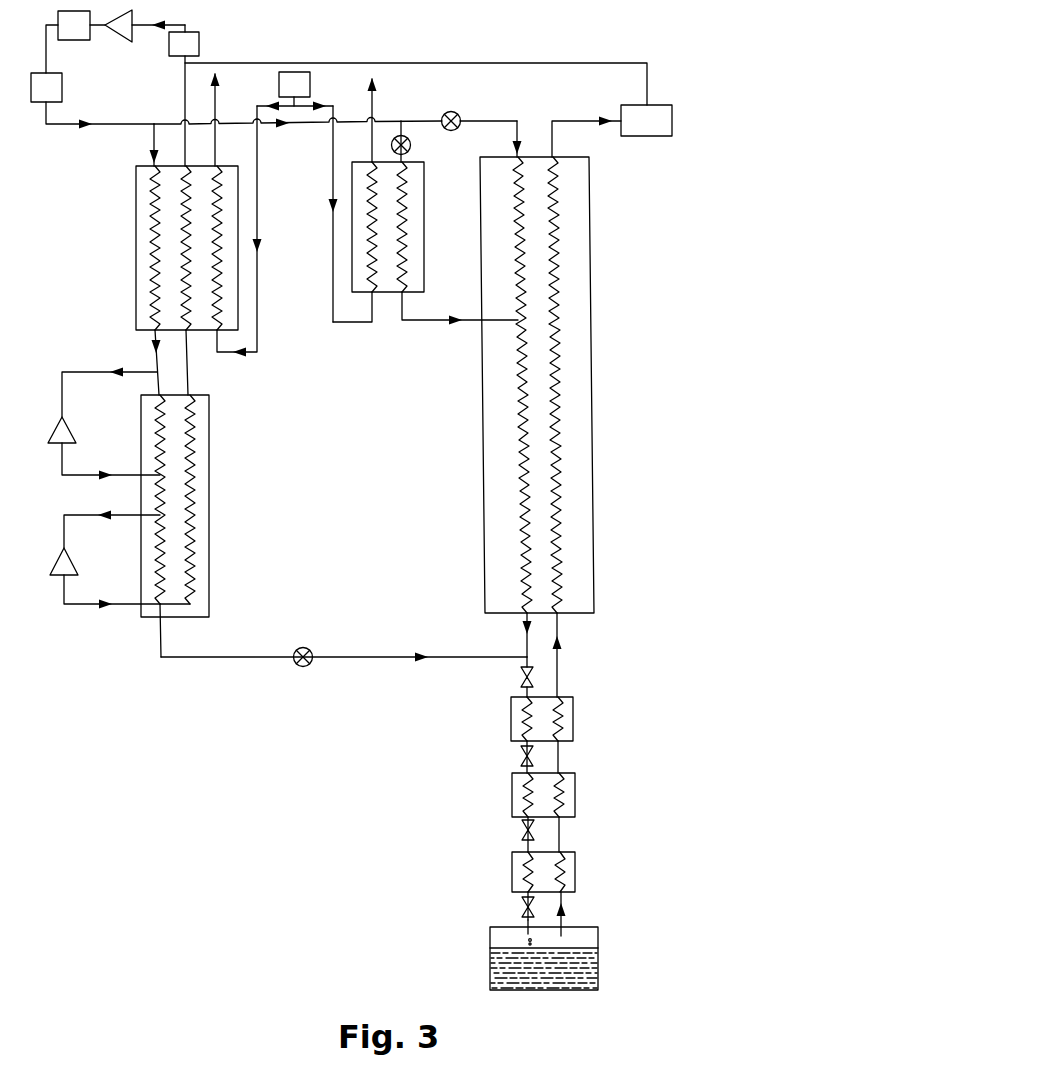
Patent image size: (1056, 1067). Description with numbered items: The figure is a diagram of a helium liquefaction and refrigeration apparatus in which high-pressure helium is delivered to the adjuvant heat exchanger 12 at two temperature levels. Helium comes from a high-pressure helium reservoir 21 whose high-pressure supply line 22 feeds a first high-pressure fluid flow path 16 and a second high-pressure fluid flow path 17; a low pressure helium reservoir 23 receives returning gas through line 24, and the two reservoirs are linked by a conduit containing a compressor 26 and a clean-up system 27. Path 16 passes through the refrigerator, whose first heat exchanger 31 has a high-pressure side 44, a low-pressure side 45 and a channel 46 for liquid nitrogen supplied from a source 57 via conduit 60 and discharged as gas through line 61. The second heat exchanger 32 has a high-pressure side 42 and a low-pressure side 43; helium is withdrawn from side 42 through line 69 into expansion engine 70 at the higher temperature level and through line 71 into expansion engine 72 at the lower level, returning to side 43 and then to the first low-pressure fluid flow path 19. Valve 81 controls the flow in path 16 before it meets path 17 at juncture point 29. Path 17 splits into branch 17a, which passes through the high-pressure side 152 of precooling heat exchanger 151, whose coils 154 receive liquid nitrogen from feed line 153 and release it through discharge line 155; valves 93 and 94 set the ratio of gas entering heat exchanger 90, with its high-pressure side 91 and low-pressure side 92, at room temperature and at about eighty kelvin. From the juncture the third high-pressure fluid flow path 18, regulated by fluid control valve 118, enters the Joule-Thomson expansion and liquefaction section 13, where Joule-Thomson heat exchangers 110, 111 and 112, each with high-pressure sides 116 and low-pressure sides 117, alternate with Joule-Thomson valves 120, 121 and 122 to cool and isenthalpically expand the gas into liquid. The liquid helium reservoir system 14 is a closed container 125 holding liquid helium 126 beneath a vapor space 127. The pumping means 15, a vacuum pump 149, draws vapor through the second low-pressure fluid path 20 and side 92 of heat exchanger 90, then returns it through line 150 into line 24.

The adjuvant heat exchanger 12 is at (604, 351).
The Joule-Thomson expansion and liquefaction section 13 is at (601, 777).
The liquid helium reservoir system 14 is at (614, 944).
The pumping means 15 is at (682, 111).
The first high-pressure fluid flow path 16 is at (153, 138).
The second high-pressure fluid flow path 17 is at (302, 123).
The branch 17a is at (406, 327).
The third high-pressure fluid flow path 18 is at (525, 664).
The first low-pressure fluid flow path 19 is at (190, 374).
The second low-pressure fluid path 20 is at (593, 122).
The high-pressure helium reservoir 21 is at (36, 98).
The high-pressure supply line 22 is at (63, 126).
The low pressure helium reservoir 23 is at (174, 54).
The line 24 is at (182, 62).
The compressor 26 is at (124, 33).
The clean-up system 27 is at (64, 36).
The juncture point 29 is at (525, 654).
The first heat exchanger 31 is at (136, 206).
The second heat exchanger 32 is at (148, 496).
The high-pressure side 42 is at (158, 439).
The low-pressure side 43 is at (193, 445).
The high-pressure side 44 is at (151, 243).
The low-pressure side 45 is at (181, 285).
The channel 46 is at (222, 212).
The source 57 is at (284, 94).
The conduit 60 is at (258, 306).
The line 61 is at (217, 100).
The line 69 is at (62, 374).
The expansion engine 70 is at (62, 440).
The line 71 is at (64, 528).
The expansion engine 72 is at (64, 572).
The valve 81 is at (292, 664).
The heat exchanger 90 is at (578, 294).
The high-pressure side 91 is at (517, 245).
The low-pressure side 92 is at (557, 256).
The fluid flow control valve 93 is at (458, 114).
The valve 94 is at (411, 144).
The Joule-Thomson heat exchanger 110 is at (575, 724).
The Joule-Thomson heat exchanger 111 is at (573, 795).
The Joule-Thomson heat exchanger 112 is at (573, 876).
The high-pressure side 116 is at (516, 725).
The low-pressure side 117 is at (565, 710).
The fluid control valve 118 is at (520, 683).
The Joule-Thomson valve 120 is at (520, 752).
The Joule-Thomson valve 121 is at (521, 828).
The Joule-Thomson valve 122 is at (521, 903).
The closed container 125 is at (500, 980).
The liquid helium 126 is at (500, 957).
The vapor space 127 is at (500, 940).
The vacuum pump 149 is at (632, 132).
The line 150 is at (541, 63).
The precooling heat exchanger 151 is at (389, 292).
The high-pressure side 152 is at (406, 214).
The feed line 153 is at (333, 262).
The coils 154 is at (372, 284).
The discharge line 155 is at (374, 105).